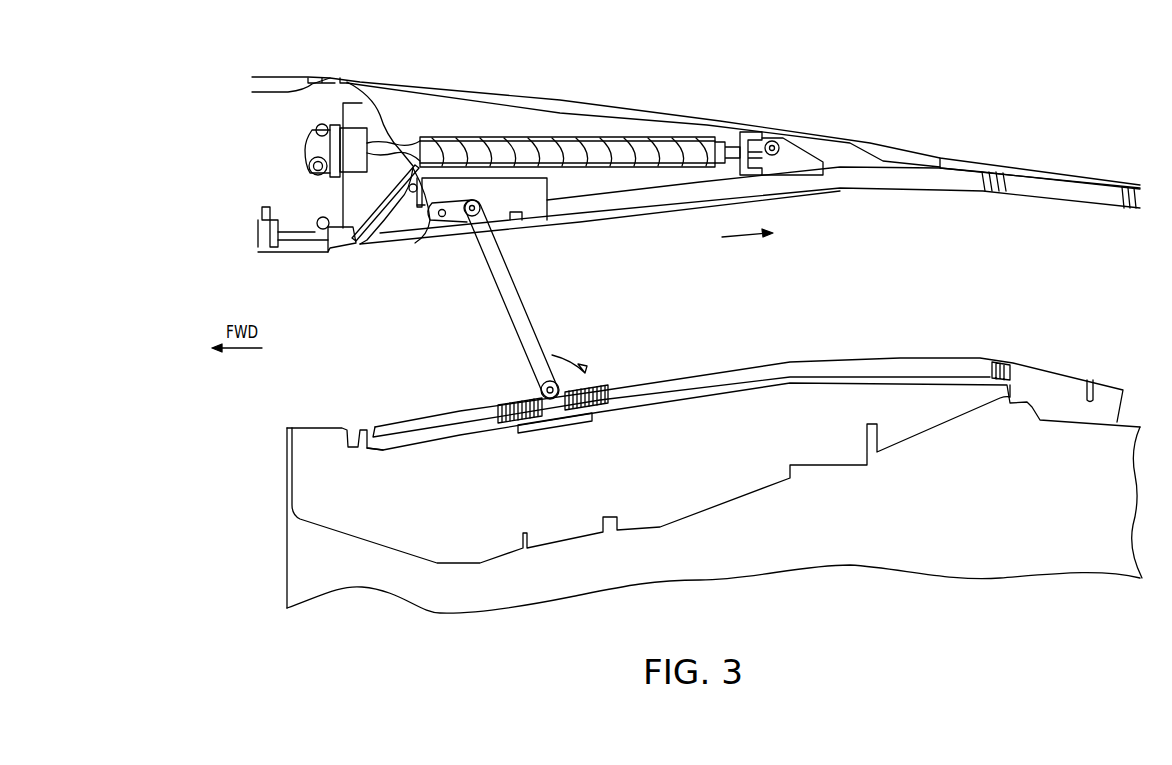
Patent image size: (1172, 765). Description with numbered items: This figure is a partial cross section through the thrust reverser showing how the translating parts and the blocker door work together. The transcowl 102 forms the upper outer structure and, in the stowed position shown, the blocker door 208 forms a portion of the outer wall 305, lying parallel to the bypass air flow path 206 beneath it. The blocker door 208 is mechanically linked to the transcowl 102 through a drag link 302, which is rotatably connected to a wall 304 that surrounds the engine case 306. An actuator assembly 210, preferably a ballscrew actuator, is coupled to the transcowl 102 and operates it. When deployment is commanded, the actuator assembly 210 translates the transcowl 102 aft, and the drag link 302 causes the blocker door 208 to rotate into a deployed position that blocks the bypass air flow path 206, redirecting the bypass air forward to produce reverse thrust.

The transcowl 102 is at (615, 104).
The bypass air flow path 206 is at (743, 240).
The blocker door 208 is at (423, 236).
The actuator assembly 210 is at (311, 145).
The drag link 302 is at (519, 304).
The wall 304 is at (707, 370).
The outer wall 305 is at (850, 192).
The engine case 306 is at (452, 562).